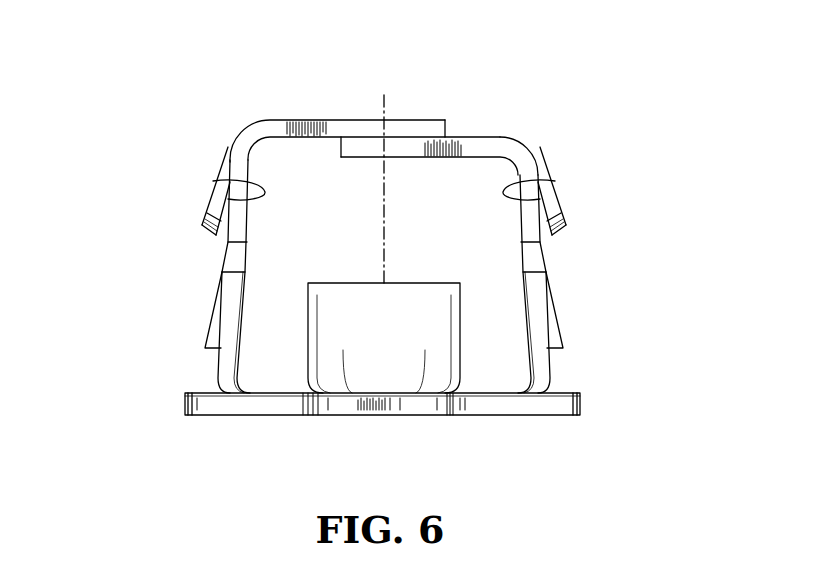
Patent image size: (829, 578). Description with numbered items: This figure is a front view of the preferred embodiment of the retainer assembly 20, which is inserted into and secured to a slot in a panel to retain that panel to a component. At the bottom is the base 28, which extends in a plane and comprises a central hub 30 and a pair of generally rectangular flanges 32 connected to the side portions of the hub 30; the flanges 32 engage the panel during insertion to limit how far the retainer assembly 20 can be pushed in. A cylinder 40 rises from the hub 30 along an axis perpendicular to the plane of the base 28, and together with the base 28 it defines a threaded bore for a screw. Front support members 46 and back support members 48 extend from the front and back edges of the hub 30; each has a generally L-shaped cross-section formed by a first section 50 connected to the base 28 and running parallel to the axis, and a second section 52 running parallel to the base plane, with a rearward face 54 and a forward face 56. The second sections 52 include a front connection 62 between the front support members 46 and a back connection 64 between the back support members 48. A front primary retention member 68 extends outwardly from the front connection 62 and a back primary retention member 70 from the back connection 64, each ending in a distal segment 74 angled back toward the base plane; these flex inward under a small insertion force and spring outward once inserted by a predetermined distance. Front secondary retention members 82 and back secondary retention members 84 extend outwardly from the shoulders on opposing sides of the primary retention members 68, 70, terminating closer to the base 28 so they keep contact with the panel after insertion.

The retainer assembly 20 is at (593, 96).
The base 28 is at (341, 414).
The hub 30 is at (373, 409).
The flanges 32 is at (185, 405).
The cylinder 40 is at (402, 347).
The front support members 46 is at (545, 272).
The back support members 48 is at (223, 257).
The first section 50 is at (220, 273).
The second section 52 is at (281, 120).
The rearward face 54 is at (205, 213).
The forward face 56 is at (213, 182).
The front connection 62 is at (361, 133).
The back connection 64 is at (424, 119).
The front primary retention member 68 is at (558, 208).
The back primary retention member 70 is at (229, 166).
The distal segment 74 is at (200, 229).
The front secondary retention members 82 is at (563, 348).
The back secondary retention members 84 is at (205, 348).